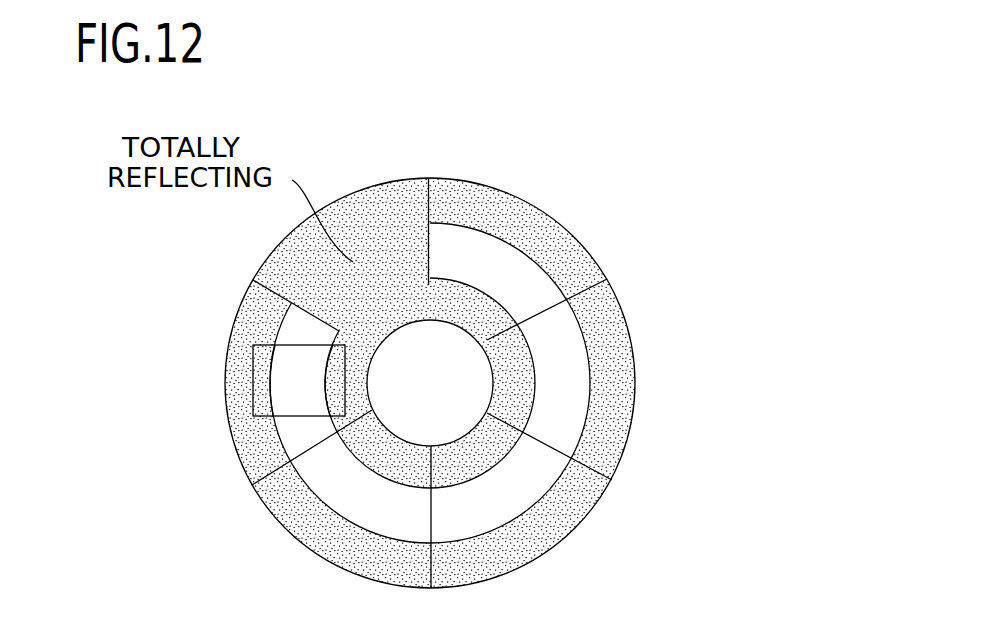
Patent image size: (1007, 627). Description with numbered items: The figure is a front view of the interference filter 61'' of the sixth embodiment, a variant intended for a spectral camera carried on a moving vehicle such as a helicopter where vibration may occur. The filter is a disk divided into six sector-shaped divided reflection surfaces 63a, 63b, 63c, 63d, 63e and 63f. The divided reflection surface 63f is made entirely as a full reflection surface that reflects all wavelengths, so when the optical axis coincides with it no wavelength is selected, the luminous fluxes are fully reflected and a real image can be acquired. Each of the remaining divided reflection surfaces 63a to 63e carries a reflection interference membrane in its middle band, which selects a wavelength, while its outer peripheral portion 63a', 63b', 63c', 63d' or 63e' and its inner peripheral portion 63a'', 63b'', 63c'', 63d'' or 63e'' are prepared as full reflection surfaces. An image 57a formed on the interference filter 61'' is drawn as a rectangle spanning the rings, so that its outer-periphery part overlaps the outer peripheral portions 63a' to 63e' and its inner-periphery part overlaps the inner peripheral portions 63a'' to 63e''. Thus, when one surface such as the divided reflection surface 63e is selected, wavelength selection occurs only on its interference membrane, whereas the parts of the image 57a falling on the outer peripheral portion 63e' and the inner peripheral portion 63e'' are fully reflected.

The interference filter 61'' is at (430, 345).
The divided reflection surface 63f is at (372, 210).
The divided reflection surface 63a is at (544, 262).
The outer peripheral portion 63a' is at (538, 217).
The inner peripheral portion 63a'' is at (474, 234).
The divided reflection surface 63b is at (617, 391).
The outer peripheral portion 63b' is at (659, 383).
The inner peripheral portion 63b'' is at (607, 335).
The divided reflection surface 63c is at (550, 513).
The outer peripheral portion 63c' is at (585, 525).
The inner peripheral portion 63c'' is at (514, 517).
The divided reflection surface 63d is at (313, 503).
The outer peripheral portion 63d' is at (295, 525).
The inner peripheral portion 63d'' is at (350, 520).
The divided reflection surface 63e is at (220, 383).
The outer peripheral portion 63e' is at (221, 350).
The inner peripheral portion 63e'' is at (393, 383).
The image 57a is at (287, 370).